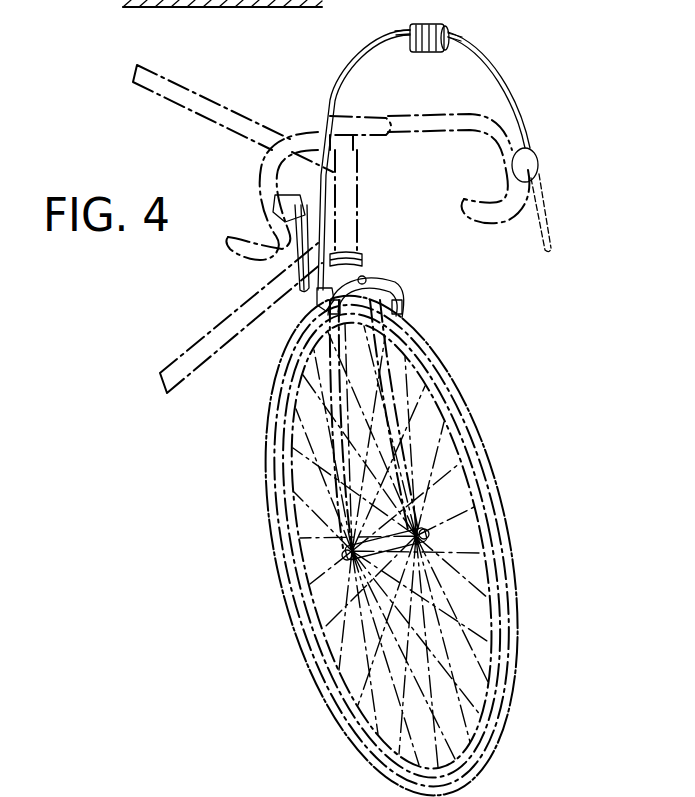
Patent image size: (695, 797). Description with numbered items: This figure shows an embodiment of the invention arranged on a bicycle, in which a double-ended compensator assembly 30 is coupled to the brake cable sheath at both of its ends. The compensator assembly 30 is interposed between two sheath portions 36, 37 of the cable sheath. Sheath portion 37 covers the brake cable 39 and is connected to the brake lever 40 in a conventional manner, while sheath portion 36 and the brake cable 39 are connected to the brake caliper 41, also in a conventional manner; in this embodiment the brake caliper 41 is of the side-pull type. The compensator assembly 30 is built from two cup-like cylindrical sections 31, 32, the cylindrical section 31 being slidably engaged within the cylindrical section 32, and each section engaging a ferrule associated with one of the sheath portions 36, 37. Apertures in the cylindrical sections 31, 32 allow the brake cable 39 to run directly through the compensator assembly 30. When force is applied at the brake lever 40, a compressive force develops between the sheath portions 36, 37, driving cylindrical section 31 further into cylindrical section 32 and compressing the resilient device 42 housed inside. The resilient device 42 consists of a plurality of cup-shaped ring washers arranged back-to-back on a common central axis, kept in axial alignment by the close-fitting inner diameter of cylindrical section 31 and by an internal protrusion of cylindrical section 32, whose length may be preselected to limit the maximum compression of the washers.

The compensator assembly 30 is at (427, 56).
The cylindrical section 31 is at (408, 26).
The cylindrical section 32 is at (450, 27).
The sheath portion 36 is at (344, 58).
The sheath portion 37 is at (510, 85).
The brake cable 39 is at (306, 304).
The brake lever 40 is at (538, 155).
The brake caliper 41 is at (385, 281).
The resilient device 42 is at (183, 6).